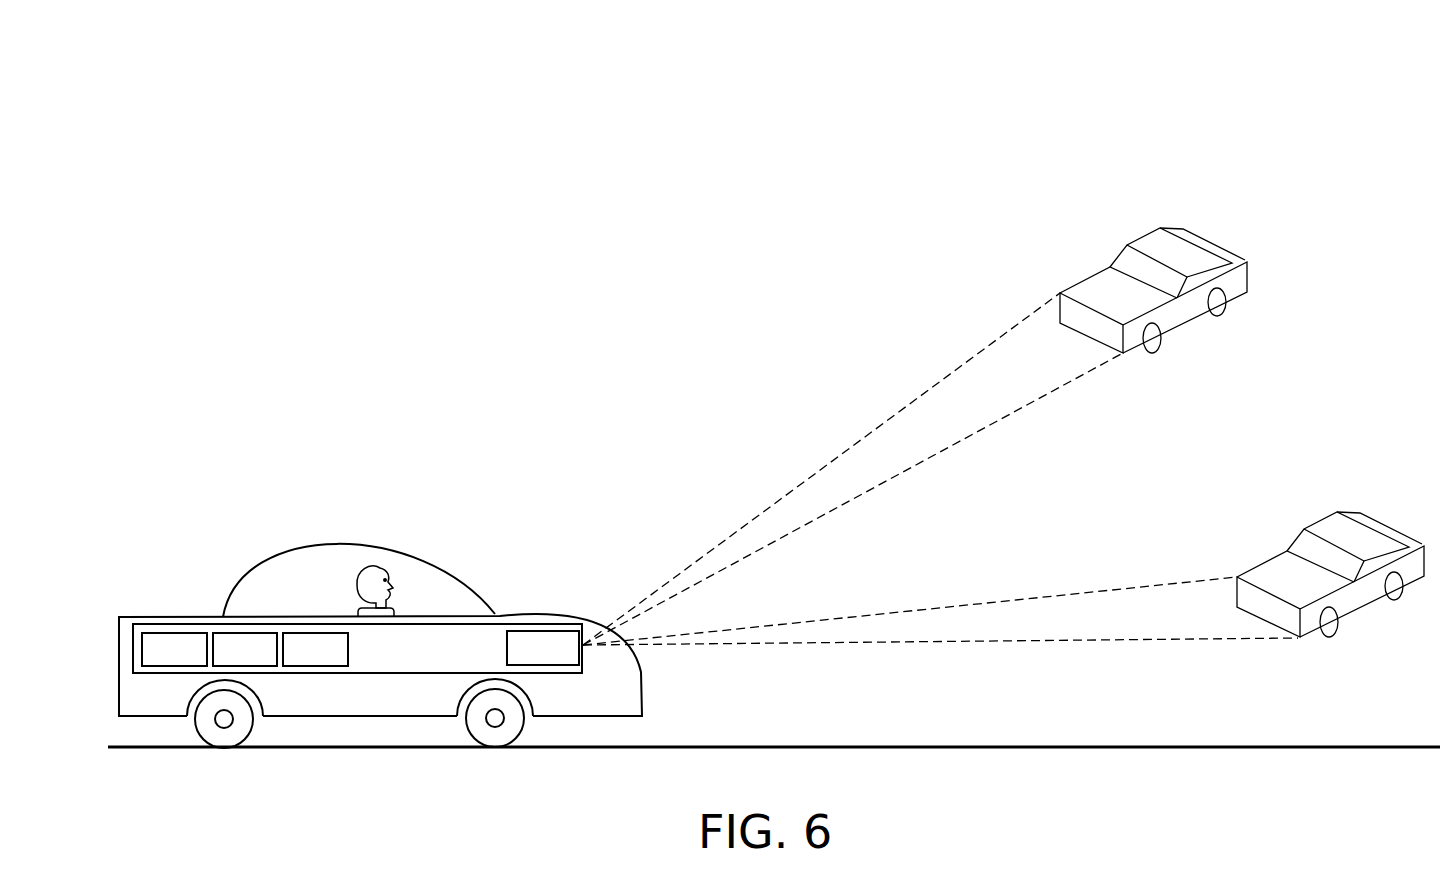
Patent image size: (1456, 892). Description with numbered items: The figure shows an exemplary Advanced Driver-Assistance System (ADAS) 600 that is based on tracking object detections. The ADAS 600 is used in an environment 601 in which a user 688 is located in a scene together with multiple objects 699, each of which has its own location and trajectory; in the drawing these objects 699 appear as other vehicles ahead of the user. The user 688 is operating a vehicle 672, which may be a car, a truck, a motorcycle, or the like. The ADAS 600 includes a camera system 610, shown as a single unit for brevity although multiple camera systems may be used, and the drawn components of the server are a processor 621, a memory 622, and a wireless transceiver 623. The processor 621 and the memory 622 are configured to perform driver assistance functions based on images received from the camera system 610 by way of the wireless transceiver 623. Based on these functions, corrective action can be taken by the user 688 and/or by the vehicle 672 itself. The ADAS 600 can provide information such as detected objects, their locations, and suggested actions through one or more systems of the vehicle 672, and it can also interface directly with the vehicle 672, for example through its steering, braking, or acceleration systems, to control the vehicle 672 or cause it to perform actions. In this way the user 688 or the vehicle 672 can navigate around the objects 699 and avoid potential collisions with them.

The environment 601 is at (270, 56).
The vehicle 672 is at (100, 640).
The user 688 is at (335, 580).
The Advanced Driver-Assistance System (ADAS) 600 is at (426, 668).
The processor 621 is at (152, 659).
The memory 622 is at (222, 659).
The wireless transceiver 623 is at (293, 659).
The camera system 610 is at (520, 659).
The objects 699 is at (1134, 218).